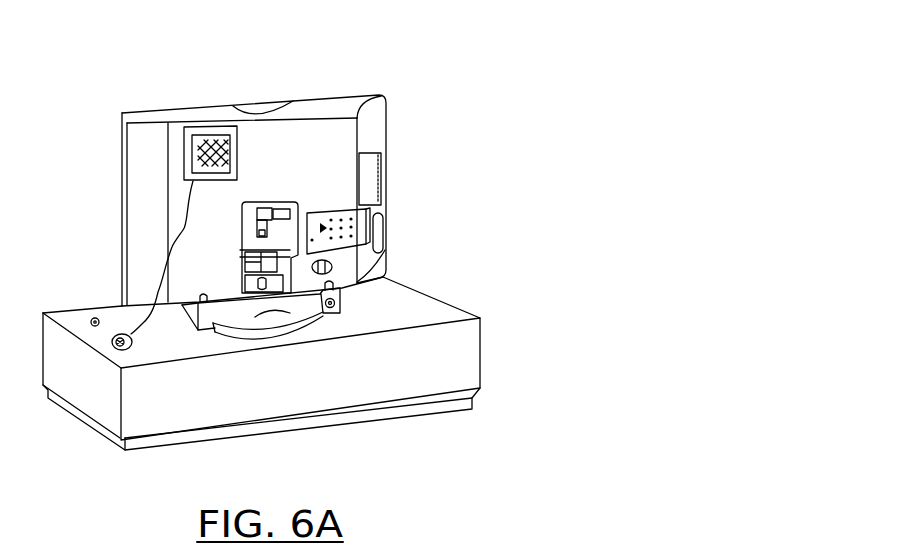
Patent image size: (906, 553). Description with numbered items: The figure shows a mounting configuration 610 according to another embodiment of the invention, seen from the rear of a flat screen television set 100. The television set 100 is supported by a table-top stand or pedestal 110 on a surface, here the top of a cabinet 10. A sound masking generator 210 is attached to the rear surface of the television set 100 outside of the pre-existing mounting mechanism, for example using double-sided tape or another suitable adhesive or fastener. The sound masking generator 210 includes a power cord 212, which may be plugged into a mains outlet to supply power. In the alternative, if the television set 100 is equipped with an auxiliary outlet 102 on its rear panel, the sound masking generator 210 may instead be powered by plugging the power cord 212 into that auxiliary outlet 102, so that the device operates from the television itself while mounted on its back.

The cabinet 10 is at (90, 320).
The television set 100 is at (281, 208).
The auxiliary outlet 102 is at (340, 258).
The table-top stand 110 is at (333, 307).
The sound masking generator 210 is at (213, 127).
The power cord 212 is at (133, 336).
The mounting configuration 610 is at (299, 227).